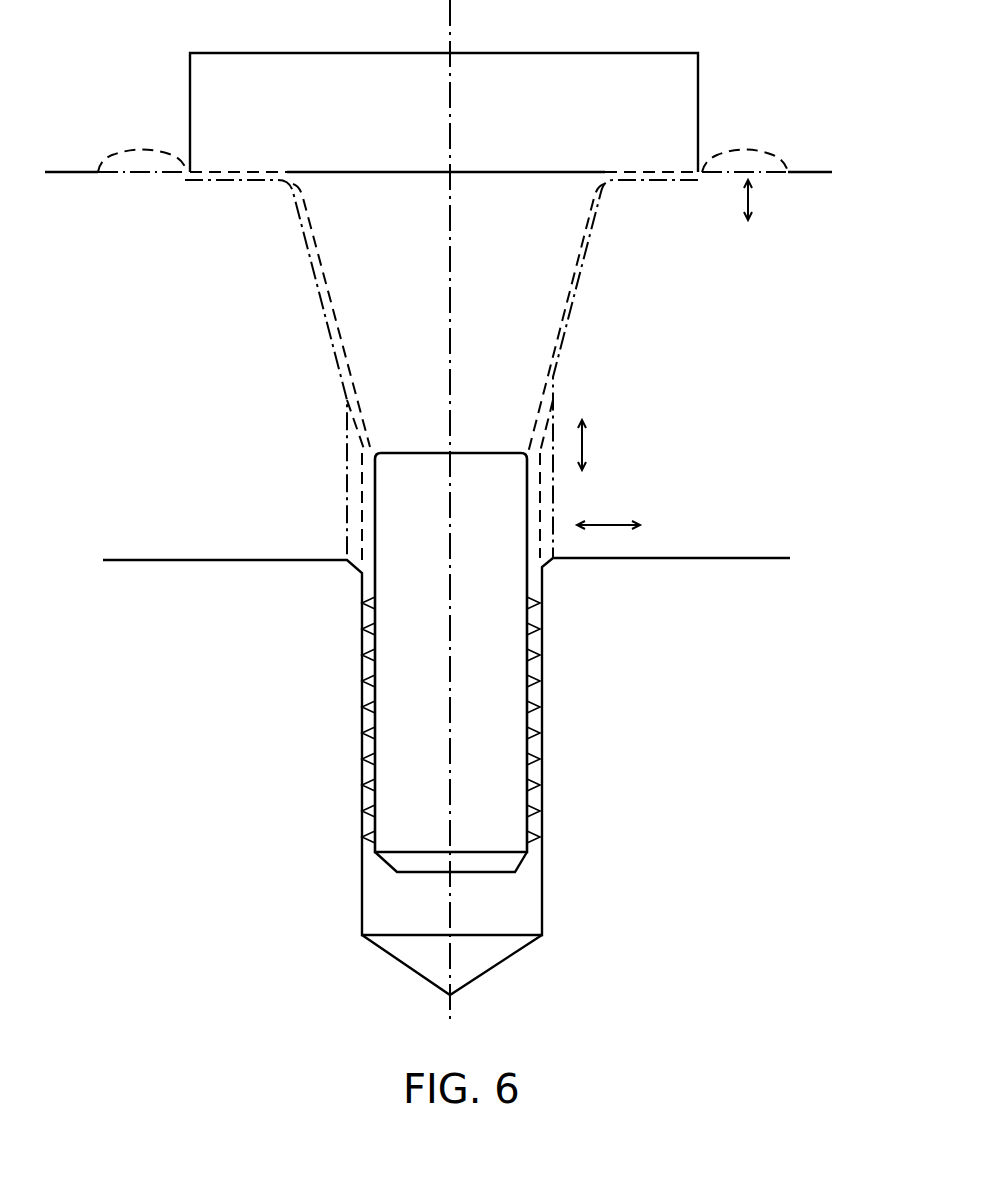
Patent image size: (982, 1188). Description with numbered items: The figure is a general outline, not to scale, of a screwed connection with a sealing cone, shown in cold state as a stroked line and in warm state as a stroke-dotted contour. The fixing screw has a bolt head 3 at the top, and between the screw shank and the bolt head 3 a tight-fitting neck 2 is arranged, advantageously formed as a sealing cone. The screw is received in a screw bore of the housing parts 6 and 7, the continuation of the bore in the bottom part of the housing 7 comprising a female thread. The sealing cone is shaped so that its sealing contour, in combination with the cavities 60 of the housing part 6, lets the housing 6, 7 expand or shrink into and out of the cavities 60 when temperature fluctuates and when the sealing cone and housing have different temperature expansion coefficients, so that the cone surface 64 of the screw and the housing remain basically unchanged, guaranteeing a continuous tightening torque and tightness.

The tight-fitting neck 2 is at (507, 299).
The bolt head 3 is at (545, 53).
The housing part 6 is at (739, 375).
The housing part 7 is at (722, 746).
The cavities 60 is at (747, 153).
The cone surface 64 is at (578, 288).